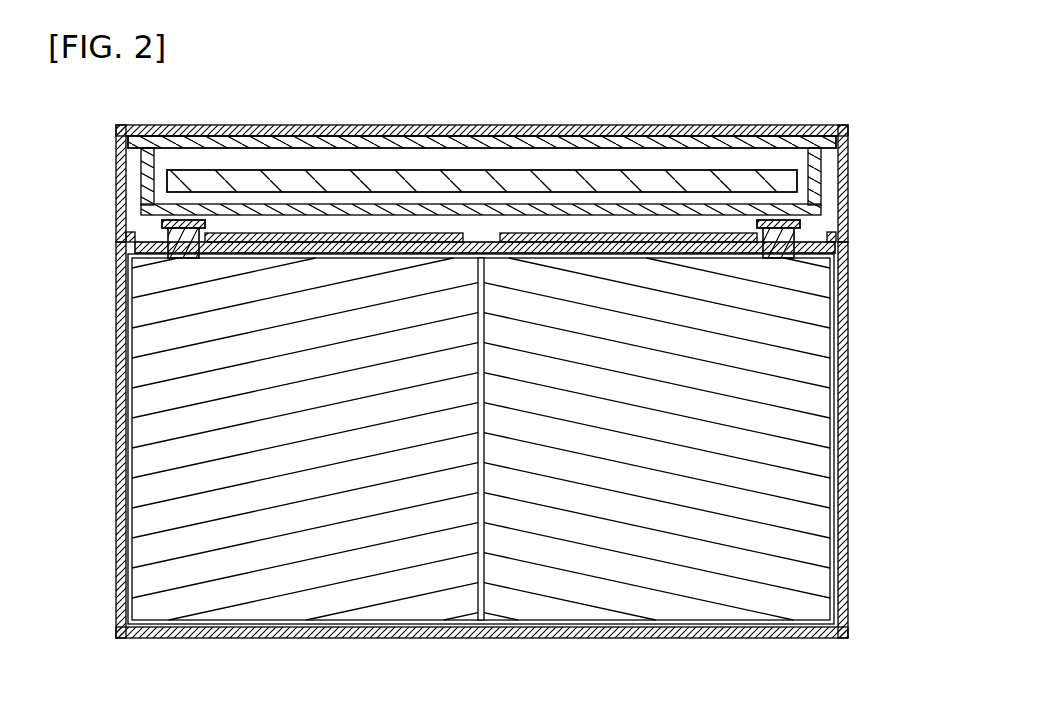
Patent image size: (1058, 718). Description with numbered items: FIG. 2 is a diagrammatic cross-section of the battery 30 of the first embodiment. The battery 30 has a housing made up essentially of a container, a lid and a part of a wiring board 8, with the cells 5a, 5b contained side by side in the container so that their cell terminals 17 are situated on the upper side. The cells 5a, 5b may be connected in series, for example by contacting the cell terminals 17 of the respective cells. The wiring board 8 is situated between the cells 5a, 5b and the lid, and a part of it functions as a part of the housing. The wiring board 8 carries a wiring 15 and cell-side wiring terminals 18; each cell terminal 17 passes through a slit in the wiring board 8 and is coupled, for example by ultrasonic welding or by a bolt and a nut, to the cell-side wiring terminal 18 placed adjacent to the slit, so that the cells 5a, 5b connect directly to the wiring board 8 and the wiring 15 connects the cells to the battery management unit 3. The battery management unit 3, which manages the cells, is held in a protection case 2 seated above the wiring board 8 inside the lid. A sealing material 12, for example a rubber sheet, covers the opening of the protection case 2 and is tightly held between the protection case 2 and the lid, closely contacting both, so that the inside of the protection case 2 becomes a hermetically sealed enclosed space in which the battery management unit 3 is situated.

The battery 30 is at (812, 96).
The sealing material 12 is at (305, 131).
The protection case 2 is at (830, 172).
The battery management unit 3 is at (447, 186).
The wiring 15 is at (338, 232).
The wiring board 8 is at (483, 241).
The cell-side wiring terminal 18 is at (131, 231).
The cell terminal 17 is at (129, 253).
The cell 5a is at (195, 475).
The cell 5b is at (765, 517).